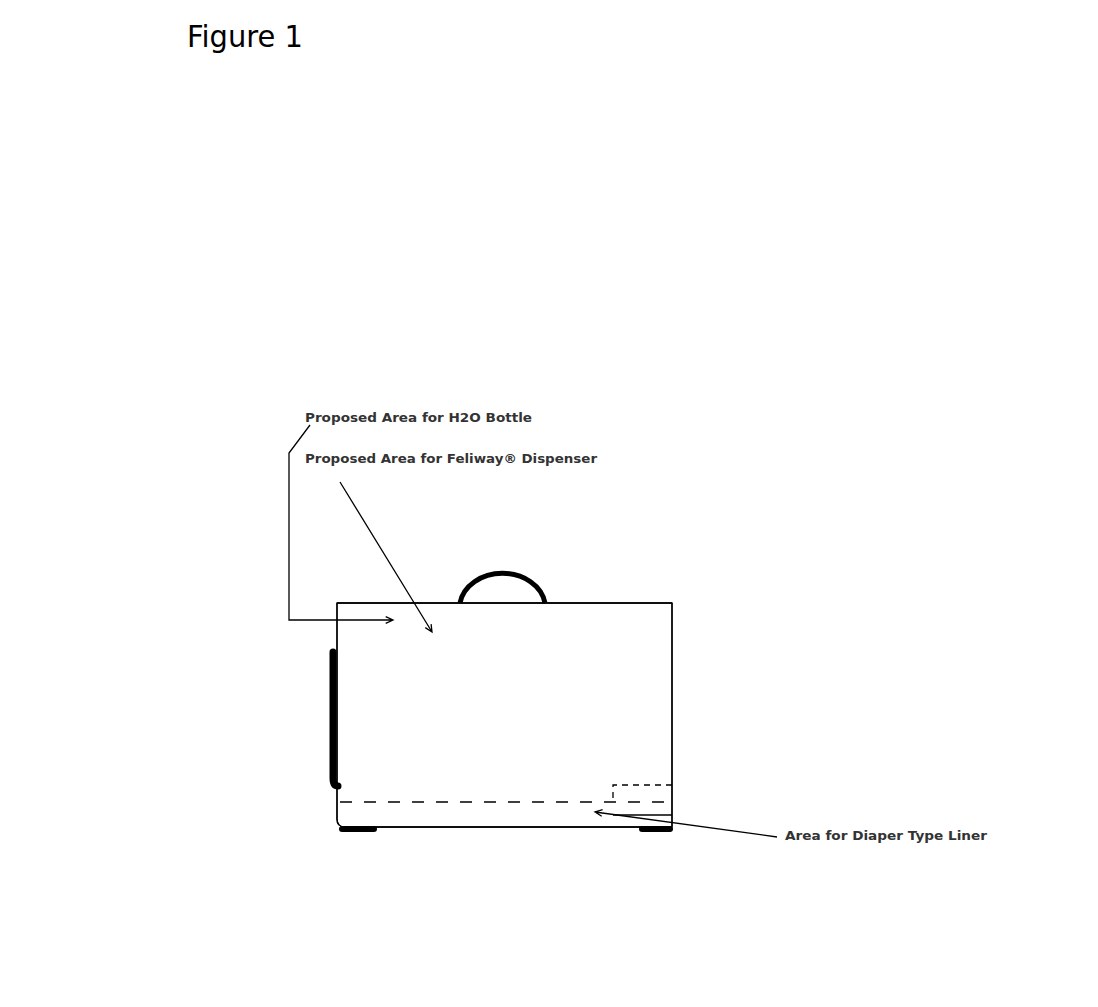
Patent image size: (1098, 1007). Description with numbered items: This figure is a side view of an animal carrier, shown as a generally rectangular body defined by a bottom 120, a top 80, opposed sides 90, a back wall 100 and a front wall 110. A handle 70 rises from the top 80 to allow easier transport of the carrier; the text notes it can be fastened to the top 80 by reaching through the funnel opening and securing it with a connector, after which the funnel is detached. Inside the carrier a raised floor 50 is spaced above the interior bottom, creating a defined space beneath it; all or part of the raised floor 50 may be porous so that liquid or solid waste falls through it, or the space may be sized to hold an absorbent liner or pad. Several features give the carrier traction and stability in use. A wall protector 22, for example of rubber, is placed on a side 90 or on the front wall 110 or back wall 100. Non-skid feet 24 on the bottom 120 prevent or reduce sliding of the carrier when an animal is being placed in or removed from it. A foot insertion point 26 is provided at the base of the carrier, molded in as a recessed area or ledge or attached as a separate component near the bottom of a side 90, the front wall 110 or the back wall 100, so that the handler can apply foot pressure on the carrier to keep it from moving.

The wall protector 22 is at (319, 670).
The handle 70 is at (472, 571).
The top 80 is at (598, 598).
The back wall 100 is at (686, 640).
The side 90 is at (543, 688).
The front wall 110 is at (322, 779).
The raised floor 50 is at (580, 793).
The foot insertion point 26 is at (672, 793).
The bottom 120 is at (499, 828).
The non-skid feet 24 is at (677, 839).